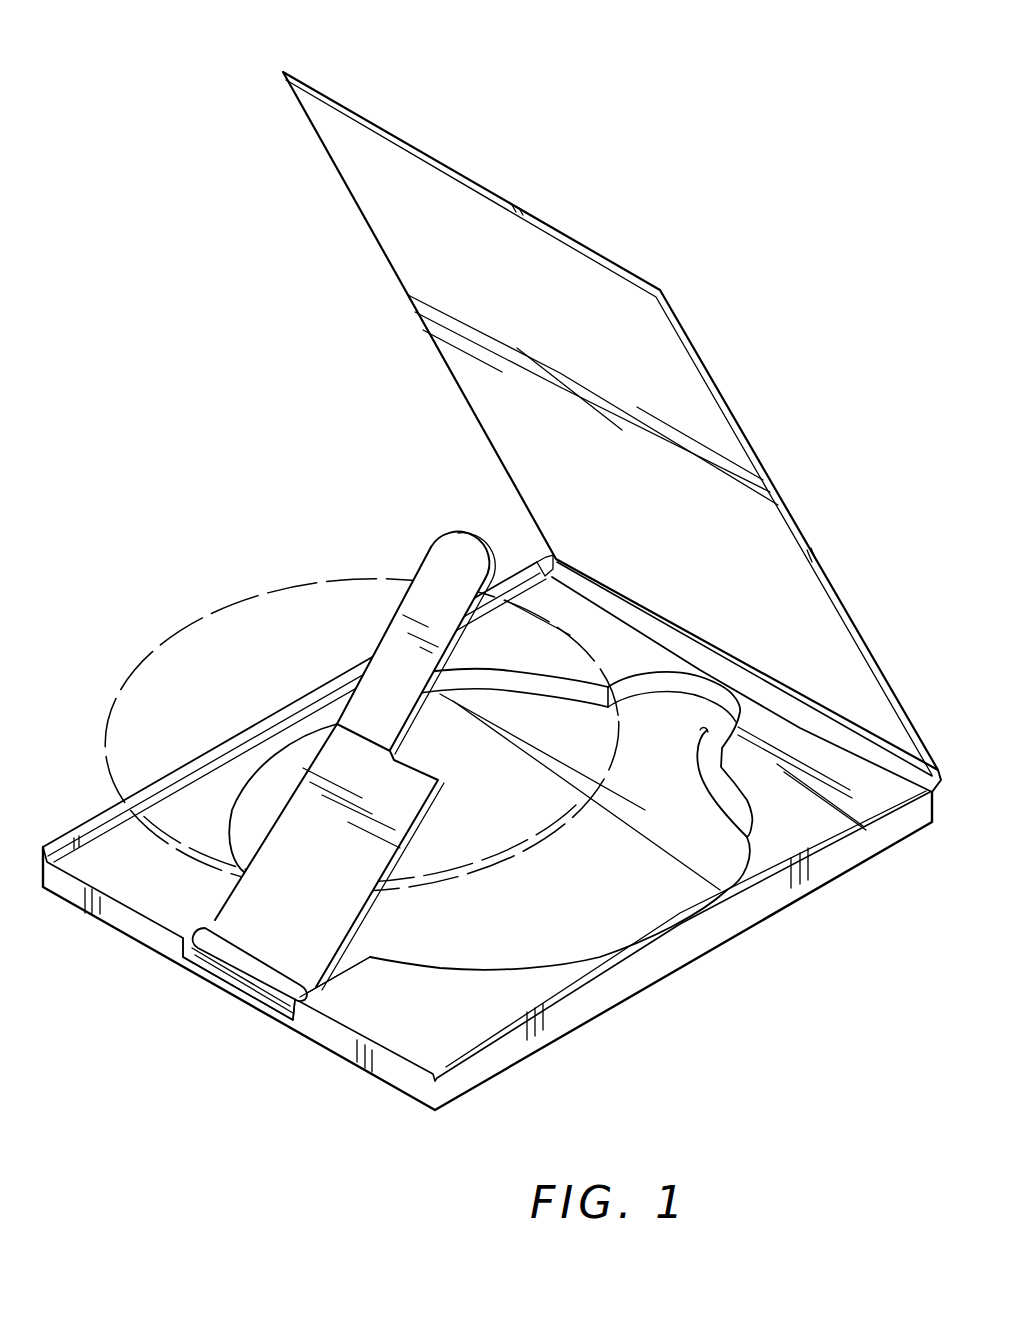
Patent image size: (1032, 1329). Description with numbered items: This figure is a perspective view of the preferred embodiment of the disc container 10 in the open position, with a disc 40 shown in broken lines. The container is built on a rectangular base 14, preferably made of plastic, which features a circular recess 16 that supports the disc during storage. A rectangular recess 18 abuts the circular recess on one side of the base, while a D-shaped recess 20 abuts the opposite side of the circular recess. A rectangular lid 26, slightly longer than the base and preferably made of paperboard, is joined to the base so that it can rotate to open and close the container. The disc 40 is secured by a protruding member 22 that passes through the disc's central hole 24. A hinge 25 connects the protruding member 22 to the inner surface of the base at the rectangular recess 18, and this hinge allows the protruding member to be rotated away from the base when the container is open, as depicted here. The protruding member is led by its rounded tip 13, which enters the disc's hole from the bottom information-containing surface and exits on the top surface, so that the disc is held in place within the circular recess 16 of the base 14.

The disc container 10 is at (242, 395).
The rounded tip of the protruding member 13 is at (474, 530).
The rectangular base 14 is at (705, 936).
The circular recess 16 is at (568, 940).
The rectangular recess 18 is at (363, 963).
The D-shaped recess 20 is at (750, 815).
The protruding member 22 is at (402, 556).
The central hole 24 is at (335, 718).
The hinge 25 is at (277, 985).
The rectangular lid 26 is at (783, 497).
The disc 40 is at (197, 645).